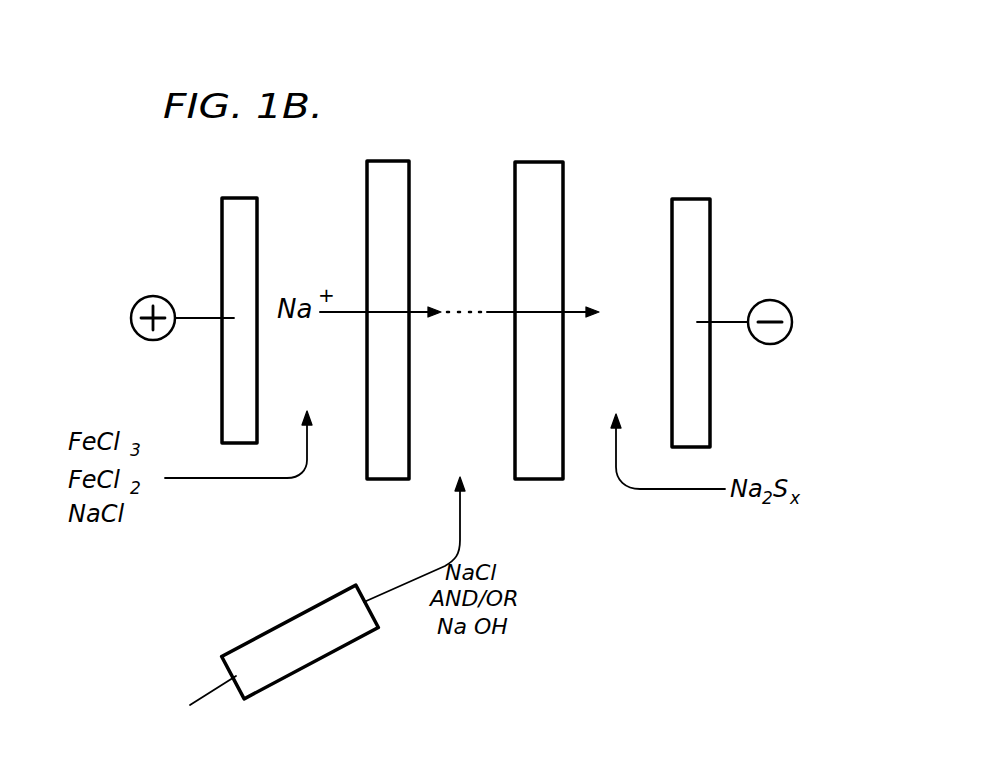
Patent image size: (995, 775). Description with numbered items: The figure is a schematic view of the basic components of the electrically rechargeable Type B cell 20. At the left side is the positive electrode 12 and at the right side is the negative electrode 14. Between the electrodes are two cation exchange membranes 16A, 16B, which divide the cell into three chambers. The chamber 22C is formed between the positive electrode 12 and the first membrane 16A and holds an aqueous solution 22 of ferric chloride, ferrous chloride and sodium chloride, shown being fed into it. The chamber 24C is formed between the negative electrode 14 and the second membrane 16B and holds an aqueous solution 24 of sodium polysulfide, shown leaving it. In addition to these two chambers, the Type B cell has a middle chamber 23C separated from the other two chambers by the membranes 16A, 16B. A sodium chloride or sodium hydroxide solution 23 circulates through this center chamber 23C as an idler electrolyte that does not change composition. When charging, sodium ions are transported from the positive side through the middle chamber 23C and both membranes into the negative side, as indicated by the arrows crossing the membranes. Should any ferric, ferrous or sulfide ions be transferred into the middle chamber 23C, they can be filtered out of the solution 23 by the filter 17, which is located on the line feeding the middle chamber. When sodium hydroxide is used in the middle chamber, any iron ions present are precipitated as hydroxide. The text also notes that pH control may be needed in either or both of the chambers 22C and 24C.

The positive electrode 12 is at (237, 229).
The negative electrode 14 is at (698, 218).
The cation exchange membrane 16A is at (371, 175).
The cation exchange membrane 16B is at (560, 176).
The filter 17 is at (280, 625).
The Type B cell 20 is at (492, 124).
The aqueous solution of FeCl3, FeCl2 and NaCl 22 is at (228, 480).
The chamber 22C is at (316, 393).
The NaCl or NaOH solution 23 is at (420, 568).
The middle chamber 23C is at (464, 395).
The aqueous solution of Na2Sx 24 is at (643, 491).
The chamber 24C is at (626, 395).